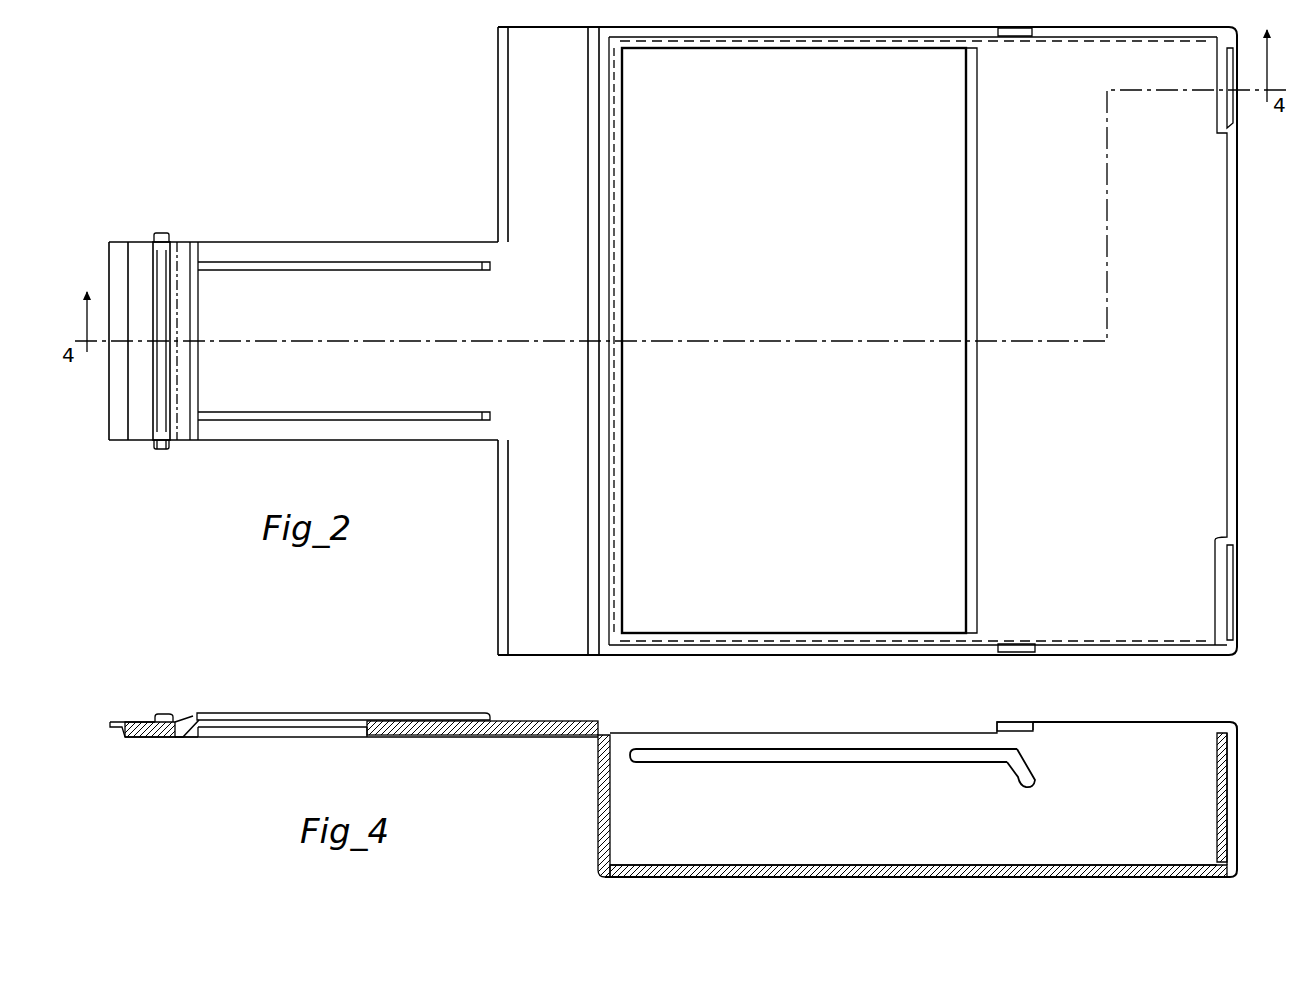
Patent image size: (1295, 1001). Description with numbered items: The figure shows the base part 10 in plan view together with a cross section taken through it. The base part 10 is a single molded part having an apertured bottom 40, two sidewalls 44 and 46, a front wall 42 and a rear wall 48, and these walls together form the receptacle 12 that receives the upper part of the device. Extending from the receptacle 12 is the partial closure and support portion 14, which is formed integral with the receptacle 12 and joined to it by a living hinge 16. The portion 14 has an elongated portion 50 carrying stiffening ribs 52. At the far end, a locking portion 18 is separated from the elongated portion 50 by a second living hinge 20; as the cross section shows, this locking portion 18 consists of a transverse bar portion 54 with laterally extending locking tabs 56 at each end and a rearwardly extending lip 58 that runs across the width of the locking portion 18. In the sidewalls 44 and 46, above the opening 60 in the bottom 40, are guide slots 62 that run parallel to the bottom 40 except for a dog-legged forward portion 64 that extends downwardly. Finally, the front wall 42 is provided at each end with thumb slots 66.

In FIG. 2, the base part 10 is at (1140, 664).
In FIG. 2, the receptacle 12 is at (1216, 506).
In FIG. 2, the partial closure and support portion 14 is at (522, 597).
In FIG. 4, the partial closure and support portion 14 is at (527, 720).
In FIG. 2, the living hinge 16 is at (608, 246).
In FIG. 4, the living hinge 16 is at (602, 728).
In FIG. 2, the locking portion 18 is at (151, 258).
In FIG. 4, the locking portion 18 is at (140, 740).
In FIG. 2, the living hinge 20 is at (200, 296).
In FIG. 4, the living hinge 20 is at (180, 740).
In FIG. 2, the apertured bottom 40 is at (1118, 493).
In FIG. 4, the apertured bottom 40 is at (1082, 876).
In FIG. 2, the front wall 42 is at (1240, 414).
In FIG. 4, the front wall 42 is at (1240, 826).
In FIG. 2, the sidewall 44 is at (1083, 644).
In FIG. 2, the sidewall 46 is at (1087, 40).
In FIG. 4, the sidewall 46 is at (930, 817).
In FIG. 2, the rear wall 48 is at (612, 488).
In FIG. 2, the elongated portion 50 is at (310, 282).
In FIG. 4, the elongated portion 50 is at (362, 742).
In FIG. 2, the stiffening ribs 52 is at (415, 272).
In FIG. 4, the stiffening ribs 52 is at (325, 700).
In FIG. 2, the transverse bar portion 54 is at (165, 386).
In FIG. 4, the transverse bar portion 54 is at (184, 728).
In FIG. 2, the locking tabs 56 is at (160, 452).
In FIG. 4, the locking tabs 56 is at (164, 714).
In FIG. 2, the rearwardly extending lip 58 is at (116, 410).
In FIG. 4, the rearwardly extending lip 58 is at (112, 722).
In FIG. 2, the opening 60 is at (958, 438).
In FIG. 4, the opening 60 is at (778, 877).
In FIG. 4, the guide slots 62 is at (762, 748).
In FIG. 4, the dog-legged forward portion 64 is at (1030, 768).
In FIG. 2, the thumb slots 66 is at (1230, 76).
In FIG. 4, the thumb slots 66 is at (1240, 754).